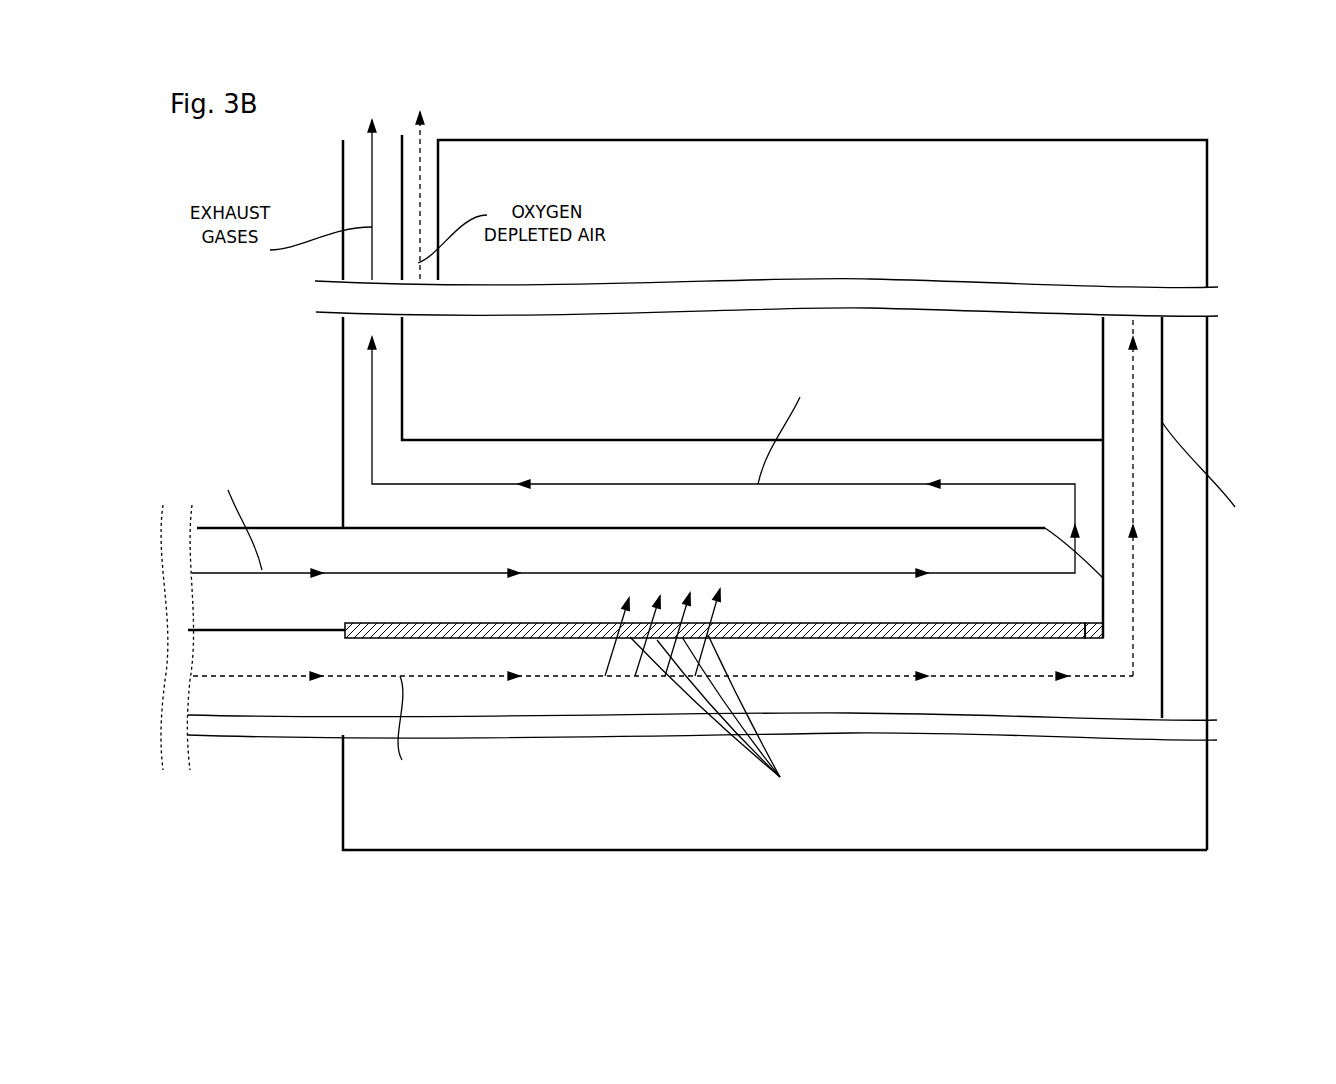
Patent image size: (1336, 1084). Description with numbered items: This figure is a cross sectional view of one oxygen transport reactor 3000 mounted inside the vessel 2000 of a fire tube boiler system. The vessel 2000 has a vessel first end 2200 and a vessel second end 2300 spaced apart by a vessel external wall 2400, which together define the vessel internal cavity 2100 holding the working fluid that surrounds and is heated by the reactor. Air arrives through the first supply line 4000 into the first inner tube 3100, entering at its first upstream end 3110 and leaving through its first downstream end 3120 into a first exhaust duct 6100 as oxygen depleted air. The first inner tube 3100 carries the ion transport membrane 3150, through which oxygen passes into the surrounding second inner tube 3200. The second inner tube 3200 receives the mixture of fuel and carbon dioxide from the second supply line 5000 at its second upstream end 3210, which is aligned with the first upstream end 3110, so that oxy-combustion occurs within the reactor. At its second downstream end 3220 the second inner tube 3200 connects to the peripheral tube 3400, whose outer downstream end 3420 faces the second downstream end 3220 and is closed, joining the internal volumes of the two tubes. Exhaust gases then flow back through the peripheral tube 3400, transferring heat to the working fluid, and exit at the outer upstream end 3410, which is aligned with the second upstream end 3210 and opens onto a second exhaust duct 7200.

The vessel 2000 is at (1240, 830).
The vessel internal cavity 2100 is at (772, 211).
The vessel first end 2200 is at (343, 748).
The vessel second end 2300 is at (1207, 333).
The vessel external wall 2400 is at (1030, 140).
The oxygen transport reactor 3000 is at (660, 416).
The first inner tube 3100 is at (663, 720).
The first upstream end 3110 is at (358, 624).
The first downstream end 3120 is at (1103, 638).
The ion transport membrane 3150 is at (782, 638).
The second inner tube 3200 is at (845, 528).
The second upstream end 3210 is at (345, 527).
The second downstream end 3220 is at (1103, 578).
The peripheral tube 3400 is at (930, 442).
The outer upstream end 3410 is at (402, 440).
The outer downstream end 3420 is at (1103, 515).
The first supply line 4000 is at (210, 633).
The second supply line 5000 is at (315, 527).
The first exhaust duct 6100 is at (1133, 367).
The second exhaust duct 7200 is at (402, 347).